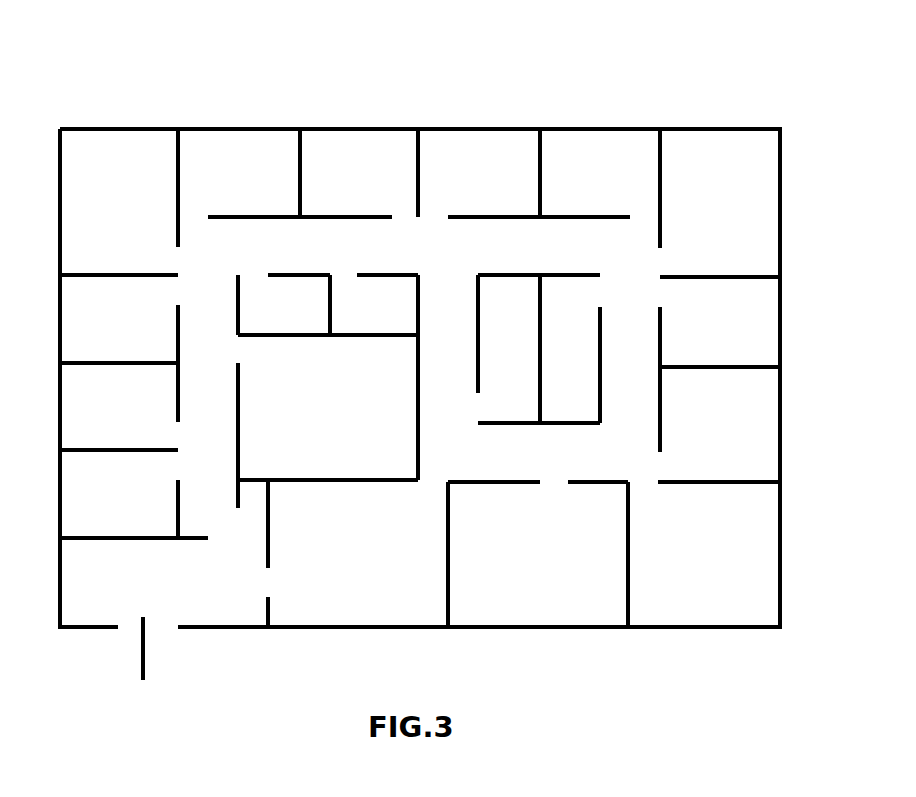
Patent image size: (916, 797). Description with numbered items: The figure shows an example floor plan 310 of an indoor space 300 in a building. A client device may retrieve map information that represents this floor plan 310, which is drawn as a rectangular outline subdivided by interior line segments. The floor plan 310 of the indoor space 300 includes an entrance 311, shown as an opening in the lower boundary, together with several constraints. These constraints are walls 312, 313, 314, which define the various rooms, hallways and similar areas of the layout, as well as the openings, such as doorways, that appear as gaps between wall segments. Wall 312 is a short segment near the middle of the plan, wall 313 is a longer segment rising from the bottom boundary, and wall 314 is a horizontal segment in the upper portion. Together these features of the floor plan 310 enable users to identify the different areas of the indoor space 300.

The indoor space 300 is at (479, 322).
The floor plan 310 is at (650, 649).
The entrance 311 is at (144, 665).
The wall 312 is at (400, 275).
The wall 313 is at (452, 536).
The wall 314 is at (615, 219).